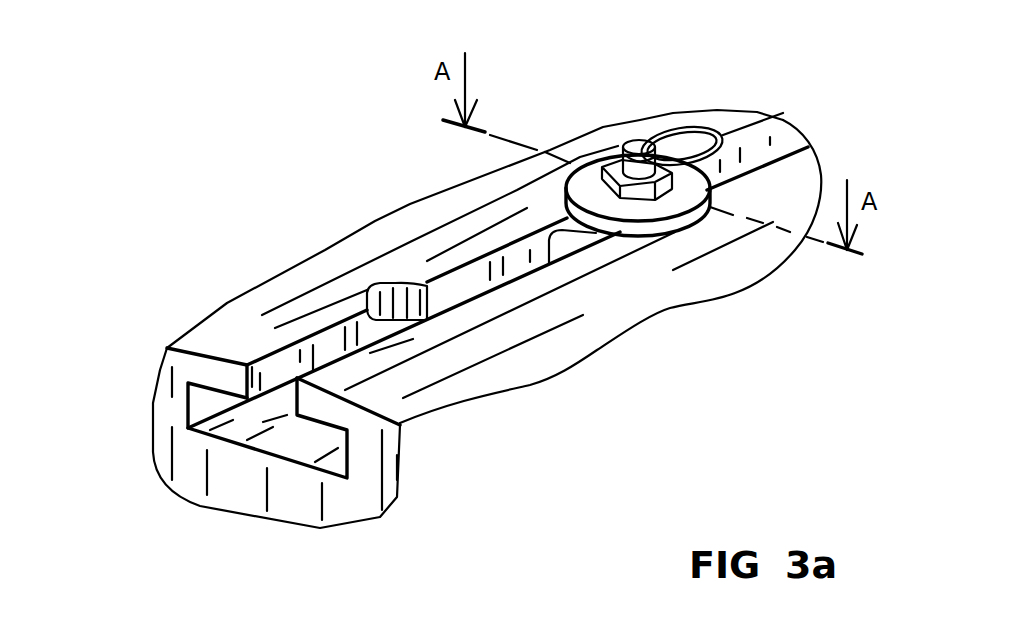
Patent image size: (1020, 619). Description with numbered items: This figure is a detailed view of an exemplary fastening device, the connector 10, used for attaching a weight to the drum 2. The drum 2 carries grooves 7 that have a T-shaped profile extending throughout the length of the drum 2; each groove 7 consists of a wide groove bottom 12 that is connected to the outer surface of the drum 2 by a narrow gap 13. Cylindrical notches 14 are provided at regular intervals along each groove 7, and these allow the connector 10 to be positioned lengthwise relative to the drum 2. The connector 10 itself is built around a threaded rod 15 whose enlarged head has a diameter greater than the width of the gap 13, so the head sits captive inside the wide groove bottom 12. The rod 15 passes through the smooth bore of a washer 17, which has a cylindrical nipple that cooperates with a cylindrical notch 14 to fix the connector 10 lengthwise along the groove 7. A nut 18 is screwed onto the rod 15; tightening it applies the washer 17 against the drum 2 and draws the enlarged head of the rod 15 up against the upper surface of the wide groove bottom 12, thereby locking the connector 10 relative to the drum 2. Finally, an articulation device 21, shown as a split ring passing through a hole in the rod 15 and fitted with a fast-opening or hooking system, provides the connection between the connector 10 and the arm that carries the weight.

The drum 2 is at (390, 390).
The groove 7 is at (291, 347).
The connector 10 is at (605, 89).
The wide groove bottom 12 is at (284, 445).
The narrow gap 13 is at (423, 322).
The cylindrical notch 14 is at (388, 305).
The rod 15 is at (645, 140).
The washer 17 is at (658, 212).
The nut 18 is at (565, 190).
The articulation device 21 is at (723, 128).